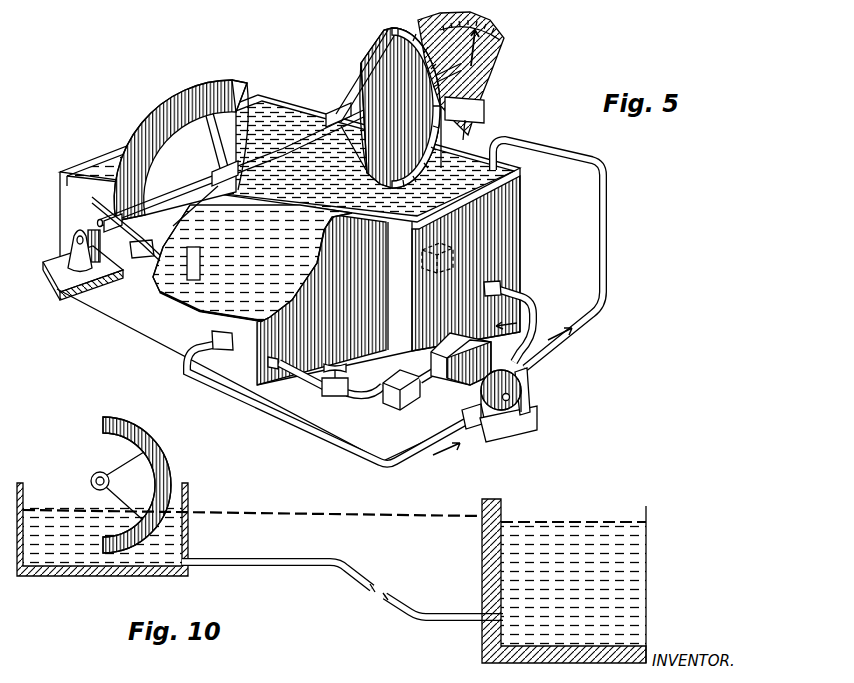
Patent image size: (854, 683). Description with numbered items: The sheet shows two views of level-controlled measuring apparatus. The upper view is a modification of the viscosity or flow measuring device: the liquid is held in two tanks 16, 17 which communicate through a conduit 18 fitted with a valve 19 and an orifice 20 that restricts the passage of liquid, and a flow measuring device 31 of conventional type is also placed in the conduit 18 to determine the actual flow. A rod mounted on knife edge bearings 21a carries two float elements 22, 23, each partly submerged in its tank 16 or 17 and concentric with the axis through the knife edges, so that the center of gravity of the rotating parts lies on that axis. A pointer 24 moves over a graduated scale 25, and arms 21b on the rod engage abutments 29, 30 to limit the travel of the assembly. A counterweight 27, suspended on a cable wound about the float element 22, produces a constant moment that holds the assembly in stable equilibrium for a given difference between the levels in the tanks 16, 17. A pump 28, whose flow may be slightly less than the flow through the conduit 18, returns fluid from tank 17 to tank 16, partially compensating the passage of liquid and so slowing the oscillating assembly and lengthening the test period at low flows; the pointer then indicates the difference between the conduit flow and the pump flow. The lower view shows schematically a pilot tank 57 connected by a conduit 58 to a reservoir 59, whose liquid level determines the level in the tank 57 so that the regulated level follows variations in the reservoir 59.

In FIG. 5, the tank 16 is at (504, 222).
In FIG. 5, the tank 17 is at (147, 318).
In FIG. 5, the conduit 18 is at (364, 403).
In FIG. 5, the valve 19 is at (328, 392).
In FIG. 5, the orifice 20 is at (455, 380).
In FIG. 5, the knife edge bearings 21a is at (471, 90).
In FIG. 5, the arms 21b is at (100, 197).
In FIG. 5, the float element 22 is at (372, 52).
In FIG. 5, the float element 23 is at (152, 104).
In FIG. 5, the pointer 24 is at (484, 72).
In FIG. 5, the graduated scale 25 is at (491, 44).
In FIG. 5, the counterweight 27 is at (457, 258).
In FIG. 5, the pump 28 is at (523, 388).
In FIG. 5, the abutment 29 is at (156, 250).
In FIG. 5, the abutment 30 is at (82, 223).
In FIG. 5, the flow measuring device 31 is at (411, 394).
In FIG. 10, the pilot tank 57 is at (190, 494).
In FIG. 10, the conduit 58 is at (268, 566).
In FIG. 10, the reservoir 59 is at (504, 506).